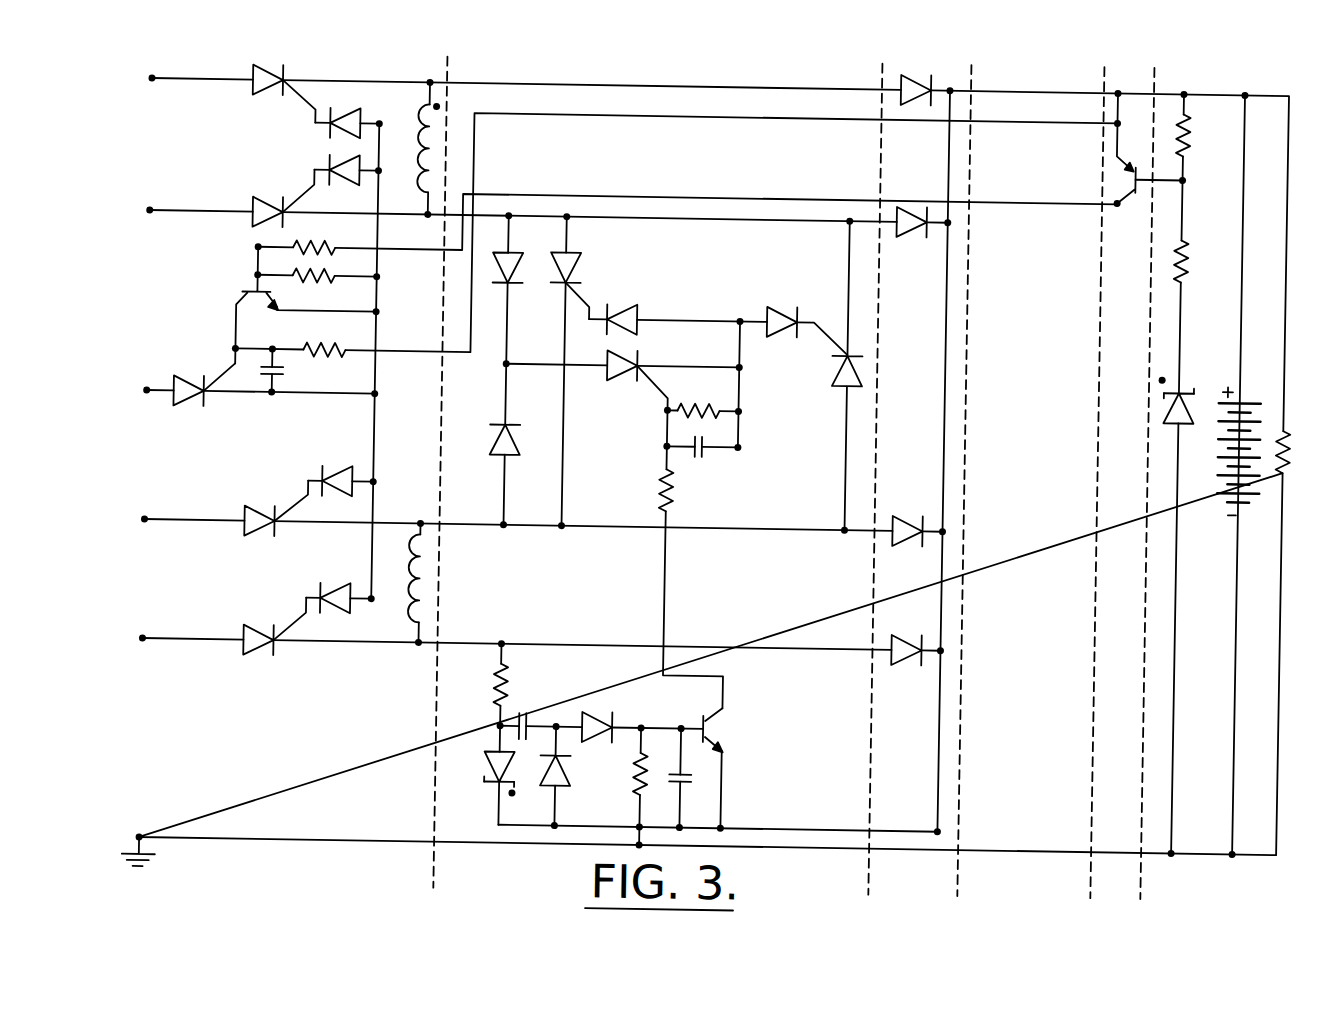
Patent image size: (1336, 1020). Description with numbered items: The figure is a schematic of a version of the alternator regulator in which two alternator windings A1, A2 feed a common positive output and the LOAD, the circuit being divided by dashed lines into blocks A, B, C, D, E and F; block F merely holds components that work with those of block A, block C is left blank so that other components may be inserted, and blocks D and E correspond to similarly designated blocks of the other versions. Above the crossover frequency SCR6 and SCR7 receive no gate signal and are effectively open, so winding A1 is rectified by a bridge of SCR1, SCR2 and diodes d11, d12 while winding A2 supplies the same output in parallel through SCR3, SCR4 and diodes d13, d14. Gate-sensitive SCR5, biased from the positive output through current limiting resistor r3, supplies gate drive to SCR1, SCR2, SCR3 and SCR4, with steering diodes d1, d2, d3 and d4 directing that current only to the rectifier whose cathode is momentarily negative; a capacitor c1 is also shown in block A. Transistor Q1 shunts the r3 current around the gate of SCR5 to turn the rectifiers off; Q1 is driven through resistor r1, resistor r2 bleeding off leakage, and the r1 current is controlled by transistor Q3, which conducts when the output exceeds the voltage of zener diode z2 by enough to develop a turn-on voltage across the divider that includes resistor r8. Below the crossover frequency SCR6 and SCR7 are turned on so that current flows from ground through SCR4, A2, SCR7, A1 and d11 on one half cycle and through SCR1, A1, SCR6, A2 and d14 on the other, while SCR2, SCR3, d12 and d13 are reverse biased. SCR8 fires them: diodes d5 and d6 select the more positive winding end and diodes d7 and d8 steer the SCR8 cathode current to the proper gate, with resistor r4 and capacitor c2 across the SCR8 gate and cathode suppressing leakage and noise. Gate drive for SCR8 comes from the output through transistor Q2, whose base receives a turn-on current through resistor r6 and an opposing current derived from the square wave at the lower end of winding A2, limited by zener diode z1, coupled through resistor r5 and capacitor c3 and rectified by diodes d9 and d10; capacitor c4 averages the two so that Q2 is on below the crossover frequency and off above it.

The silicon controlled rectifier SCR1 is at (267, 78).
The silicon controlled rectifier SCR2 is at (267, 197).
The silicon controlled rectifier SCR3 is at (268, 506).
The silicon controlled rectifier SCR4 is at (267, 625).
The gate sensitive silicon controlled rectifier SCR5 is at (197, 402).
The silicon controlled rectifier SCR6 is at (596, 272).
The silicon controlled rectifier SCR7 is at (818, 371).
The silicon controlled rectifier SCR8 is at (630, 383).
The steering diode d1 is at (343, 112).
The steering diode d2 is at (342, 187).
The steering diode d3 is at (340, 470).
The steering diode d4 is at (339, 587).
The diode d5 is at (519, 254).
The diode d6 is at (491, 439).
The diode d7 is at (625, 307).
The diode d8 is at (786, 309).
The rectifying diode d9 is at (575, 770).
The rectifying diode d10 is at (607, 712).
The diode d11 is at (917, 76).
The diode d12 is at (919, 236).
The diode d13 is at (917, 546).
The diode d14 is at (916, 666).
The resistor r1 is at (314, 236).
The resistor r2 is at (313, 292).
The current limiting resistor r3 is at (324, 336).
The resistor r4 is at (699, 394).
The resistor r5 is at (488, 684).
The current limiting resistor r6 is at (629, 774).
The resistor r8 is at (1199, 261).
The capacitor c1 is at (288, 380).
The capacitor c2 is at (703, 461).
The capacitor c3 is at (530, 710).
The capacitor c4 is at (693, 764).
The zener diode z1 is at (485, 773).
The zener diode z2 is at (1189, 392).
The transistor Q1 is at (298, 305).
The transistor Q2 is at (727, 730).
The transistor Q3 is at (1127, 162).
The alternator winding A1 is at (414, 147).
The alternator winding A2 is at (398, 578).
The load LOAD is at (1303, 457).
The circuit block A is at (367, 462).
The circuit block B is at (670, 61).
The circuit block C is at (1003, 473).
The circuit section D is at (1117, 476).
The circuit section E is at (1168, 476).
The circuit block F is at (914, 473).